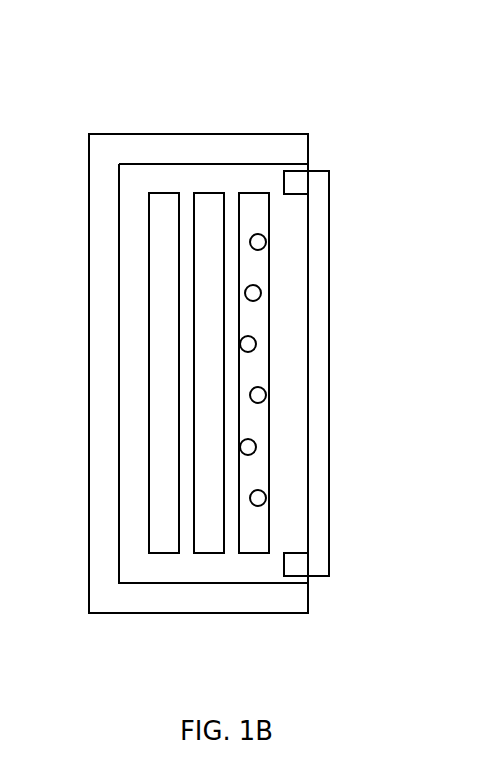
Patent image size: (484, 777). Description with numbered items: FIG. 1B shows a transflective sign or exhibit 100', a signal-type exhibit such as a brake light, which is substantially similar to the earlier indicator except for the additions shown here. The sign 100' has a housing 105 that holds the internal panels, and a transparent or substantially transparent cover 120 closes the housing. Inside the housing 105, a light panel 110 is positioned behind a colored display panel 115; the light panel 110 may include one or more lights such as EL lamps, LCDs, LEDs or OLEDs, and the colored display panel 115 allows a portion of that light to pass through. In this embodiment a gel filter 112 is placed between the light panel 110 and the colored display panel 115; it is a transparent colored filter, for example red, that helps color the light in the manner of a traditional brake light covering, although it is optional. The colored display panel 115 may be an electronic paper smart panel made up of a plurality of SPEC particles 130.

The transflective sign 100' is at (228, 309).
The housing 105 is at (220, 134).
The light panel 110 is at (180, 497).
The gel filter 112 is at (225, 422).
The colored display panel 115 is at (268, 382).
The cover 120 is at (329, 242).
The SPEC particles 130 is at (260, 297).